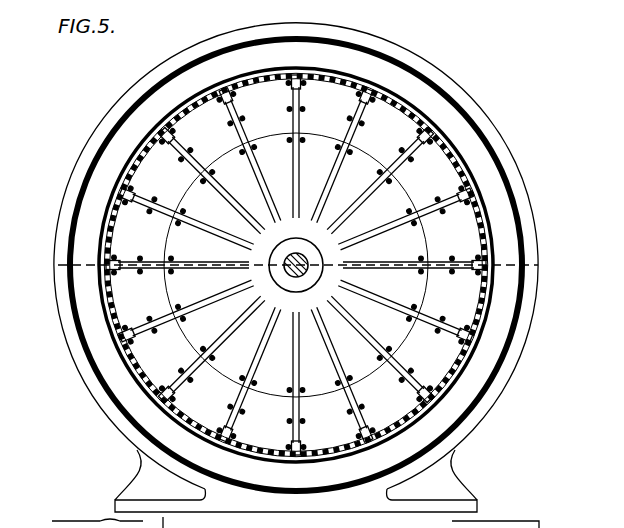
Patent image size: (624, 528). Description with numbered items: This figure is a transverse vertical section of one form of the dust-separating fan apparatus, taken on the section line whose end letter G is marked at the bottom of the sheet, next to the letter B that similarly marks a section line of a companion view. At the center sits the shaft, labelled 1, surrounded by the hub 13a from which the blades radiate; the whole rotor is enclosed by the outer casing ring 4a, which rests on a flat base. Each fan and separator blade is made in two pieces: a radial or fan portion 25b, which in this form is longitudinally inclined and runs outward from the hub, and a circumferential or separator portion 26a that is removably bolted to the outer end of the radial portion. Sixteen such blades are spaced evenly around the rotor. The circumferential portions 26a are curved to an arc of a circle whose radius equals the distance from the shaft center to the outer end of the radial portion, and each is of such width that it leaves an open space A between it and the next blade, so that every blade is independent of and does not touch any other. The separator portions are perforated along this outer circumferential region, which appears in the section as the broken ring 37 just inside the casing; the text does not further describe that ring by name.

The shaft 1 is at (284, 275).
The frame ring 4a is at (536, 213).
The hub 13a is at (324, 259).
The radial portion 25b is at (223, 191).
The circumferential portion 26a is at (177, 112).
The dashed rim ring 37 is at (173, 115).
The open space A is at (109, 199).
The section line B' B is at (268, 512).
The section line G is at (295, 522).